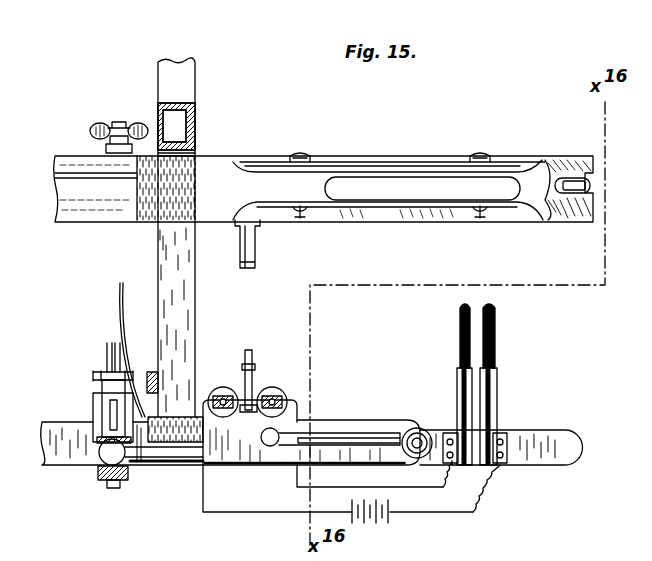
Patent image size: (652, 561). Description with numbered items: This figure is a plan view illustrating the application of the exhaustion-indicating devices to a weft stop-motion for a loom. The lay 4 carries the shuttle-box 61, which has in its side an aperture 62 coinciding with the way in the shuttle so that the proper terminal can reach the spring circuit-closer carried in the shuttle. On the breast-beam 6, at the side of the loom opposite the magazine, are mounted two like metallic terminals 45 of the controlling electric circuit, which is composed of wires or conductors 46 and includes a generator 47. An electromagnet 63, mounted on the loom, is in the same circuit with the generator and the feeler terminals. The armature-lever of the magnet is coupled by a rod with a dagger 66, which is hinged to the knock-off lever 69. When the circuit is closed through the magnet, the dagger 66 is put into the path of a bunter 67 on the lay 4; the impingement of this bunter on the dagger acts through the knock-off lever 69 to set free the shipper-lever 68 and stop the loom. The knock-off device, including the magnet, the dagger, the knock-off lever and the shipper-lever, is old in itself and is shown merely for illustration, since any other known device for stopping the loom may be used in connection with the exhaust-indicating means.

The lay 4 is at (206, 163).
The breast-beam 6 is at (67, 422).
The terminals 45 is at (488, 345).
The conductors 46 is at (408, 491).
The generator 47 is at (368, 520).
The shuttle-box 61 is at (418, 176).
The aperture 62 is at (461, 208).
The electromagnet 63 is at (281, 378).
The dagger 66 is at (245, 355).
The bunter 67 is at (256, 248).
The shipper-lever 68 is at (287, 448).
The knock-off lever 69 is at (300, 430).